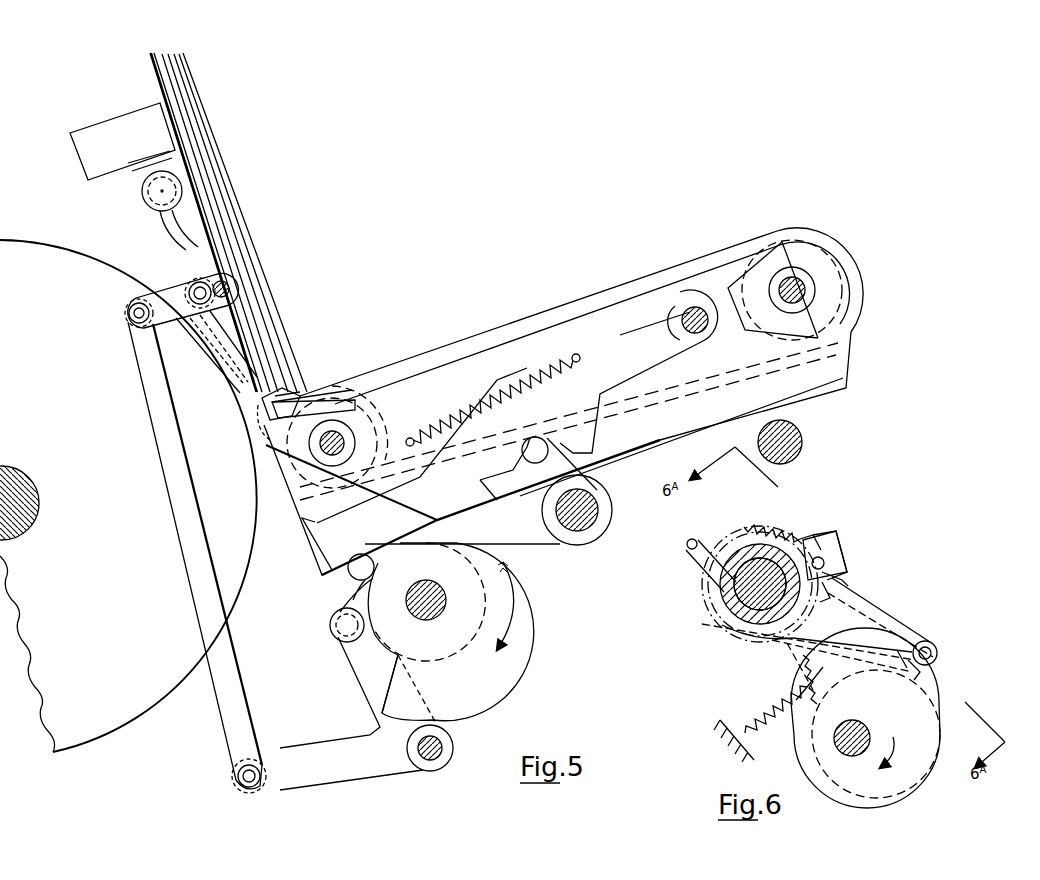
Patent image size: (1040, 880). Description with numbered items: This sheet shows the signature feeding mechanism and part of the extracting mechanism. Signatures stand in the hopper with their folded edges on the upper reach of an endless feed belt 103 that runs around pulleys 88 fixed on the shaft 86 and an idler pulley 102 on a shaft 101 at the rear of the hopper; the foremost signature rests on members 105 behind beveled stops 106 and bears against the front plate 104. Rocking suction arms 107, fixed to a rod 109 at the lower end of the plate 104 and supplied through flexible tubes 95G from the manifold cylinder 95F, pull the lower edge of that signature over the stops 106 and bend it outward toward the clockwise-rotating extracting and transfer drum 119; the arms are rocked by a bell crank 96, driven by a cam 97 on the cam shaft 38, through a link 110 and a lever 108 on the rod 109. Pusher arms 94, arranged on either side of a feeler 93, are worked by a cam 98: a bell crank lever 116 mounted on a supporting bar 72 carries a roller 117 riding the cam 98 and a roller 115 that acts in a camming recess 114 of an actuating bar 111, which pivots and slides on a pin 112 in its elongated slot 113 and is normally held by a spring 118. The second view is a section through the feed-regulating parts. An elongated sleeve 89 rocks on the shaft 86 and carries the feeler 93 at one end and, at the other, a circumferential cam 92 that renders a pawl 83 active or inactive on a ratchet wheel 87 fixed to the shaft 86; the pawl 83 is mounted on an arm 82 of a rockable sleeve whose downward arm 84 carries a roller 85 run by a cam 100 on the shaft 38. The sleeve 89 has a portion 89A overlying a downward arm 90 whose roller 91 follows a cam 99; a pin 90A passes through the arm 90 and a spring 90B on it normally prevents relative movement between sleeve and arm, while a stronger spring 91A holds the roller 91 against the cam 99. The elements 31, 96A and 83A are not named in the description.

In FIG. 5, the front plate 104 is at (157, 90).
In FIG. 5, the manifold cylinder 95F is at (146, 198).
In FIG. 5, the flexible tubes 95G is at (182, 241).
In FIG. 5, the rod 109 is at (196, 260).
In FIG. 5, the lever 108 is at (170, 298).
In FIG. 5, the suction arms 107 is at (212, 346).
In FIG. 5, the extracting and transfer drum 119 is at (43, 266).
In FIG. 5, the shaft 31 is at (10, 467).
In FIG. 5, the link 110 is at (230, 672).
In FIG. 5, the feeler 93 is at (262, 400).
In FIG. 6, the feeler 93 is at (692, 540).
In FIG. 5, the beveled stops 106 is at (292, 370).
In FIG. 5, the members 105 is at (336, 390).
In FIG. 5, the elongated sleeve 89 is at (345, 430).
In FIG. 5, the shaft 86 is at (392, 414).
In FIG. 6, the shaft 86 is at (740, 625).
In FIG. 5, the pulleys 88 is at (389, 438).
In FIG. 5, the pusher arms 94 is at (300, 507).
In FIG. 5, the endless feed belt 103 is at (592, 304).
In FIG. 5, the actuating bar 111 is at (632, 338).
In FIG. 5, the elongated slot 113 is at (680, 320).
In FIG. 5, the pin 112 is at (697, 312).
In FIG. 5, the shaft 101 is at (794, 276).
In FIG. 5, the idler pulley 102 is at (838, 262).
In FIG. 5, the spring 118 is at (529, 376).
In FIG. 5, the roller 115 is at (540, 438).
In FIG. 5, the camming recess 114 is at (513, 472).
In FIG. 5, the supporting bars 72 is at (592, 505).
In FIG. 5, the bell crank lever 116 is at (556, 548).
In FIG. 5, the roller 117 is at (350, 572).
In FIG. 5, the cam 97 is at (360, 592).
In FIG. 5, the roller 96A is at (330, 626).
In FIG. 5, the bell crank 96 is at (346, 748).
In FIG. 5, the cam shaft 38 is at (436, 597).
In FIG. 6, the cam shaft 38 is at (852, 722).
In FIG. 5, the cam 98 is at (540, 622).
In FIG. 6, the ratchet wheel 87 is at (752, 540).
In FIG. 6, the cam 92 is at (760, 527).
In FIG. 6, the latch tip 83A is at (812, 533).
In FIG. 6, the pawls 83 is at (826, 534).
In FIG. 6, the arms 82 is at (843, 550).
In FIG. 6, the portion 89A is at (838, 572).
In FIG. 6, the pin 90A is at (840, 595).
In FIG. 6, the arm 90 is at (906, 624).
In FIG. 6, the arm 84 is at (868, 616).
In FIG. 6, the roller 91 is at (938, 652).
In FIG. 6, the roller 85 is at (922, 672).
In FIG. 6, the spring 90B is at (792, 676).
In FIG. 6, the spring 91A is at (758, 718).
In FIG. 6, the cam 99 is at (872, 798).
In FIG. 6, the cam 100 is at (806, 768).